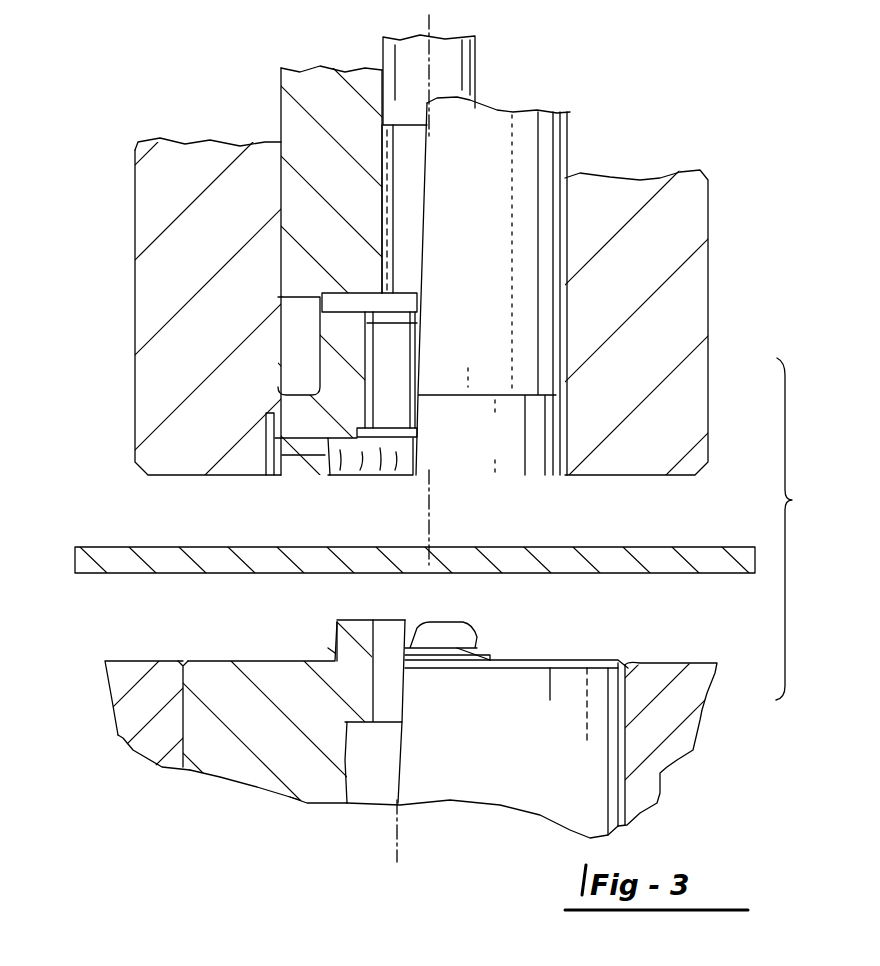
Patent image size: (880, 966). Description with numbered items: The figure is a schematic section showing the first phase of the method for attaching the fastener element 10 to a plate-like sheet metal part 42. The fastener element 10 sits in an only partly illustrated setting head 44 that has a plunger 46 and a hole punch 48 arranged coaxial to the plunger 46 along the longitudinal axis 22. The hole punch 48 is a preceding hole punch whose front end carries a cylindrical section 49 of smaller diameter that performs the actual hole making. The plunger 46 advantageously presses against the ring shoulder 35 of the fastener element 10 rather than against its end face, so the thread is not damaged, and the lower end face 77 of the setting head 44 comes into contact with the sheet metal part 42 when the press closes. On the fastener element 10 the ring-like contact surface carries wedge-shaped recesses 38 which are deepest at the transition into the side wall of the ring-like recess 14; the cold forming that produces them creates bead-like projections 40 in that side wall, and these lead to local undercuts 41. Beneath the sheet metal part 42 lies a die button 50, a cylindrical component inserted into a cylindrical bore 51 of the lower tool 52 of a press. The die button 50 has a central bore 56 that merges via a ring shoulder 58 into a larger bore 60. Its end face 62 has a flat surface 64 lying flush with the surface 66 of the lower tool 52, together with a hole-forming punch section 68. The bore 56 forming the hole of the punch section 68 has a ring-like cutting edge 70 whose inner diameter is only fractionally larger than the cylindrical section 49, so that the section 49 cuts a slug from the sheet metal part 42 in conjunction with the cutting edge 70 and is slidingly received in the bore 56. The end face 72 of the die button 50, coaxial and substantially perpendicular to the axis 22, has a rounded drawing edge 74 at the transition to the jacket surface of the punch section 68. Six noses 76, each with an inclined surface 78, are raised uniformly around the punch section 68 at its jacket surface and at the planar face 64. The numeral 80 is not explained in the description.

The fastener element 10 is at (282, 480).
The ring-like recess 14 is at (380, 478).
The longitudinal axis 22 is at (435, 528).
The ring shoulder 35 is at (300, 396).
The recesses 38 is at (343, 478).
The bead-like projections 40 is at (322, 452).
The local undercuts 41 is at (322, 440).
The sheet metal part 42 is at (107, 573).
The setting head 44 is at (712, 315).
The plunger 46 is at (568, 137).
The hole punch 48 is at (480, 68).
The cylindrical section 49 is at (402, 165).
The die button 50 is at (258, 787).
The cylindrical bore 51 is at (617, 747).
The lower tool 52 is at (122, 738).
The central bore 56 is at (374, 696).
The ring shoulder 58 is at (298, 798).
The larger bore 60 is at (350, 767).
The end face 62 is at (247, 660).
The flat surface 64 is at (208, 660).
The surface 66 is at (130, 660).
The hole-forming punch section 68 is at (338, 656).
The ring-like cutting edge 70 is at (375, 622).
The end face 72 is at (347, 618).
The rounded drawing edge 74 is at (463, 648).
The noses 76 is at (438, 628).
The lower end face 77 is at (178, 477).
The inclined surface 78 is at (330, 640).
The sleeve 80 is at (383, 236).